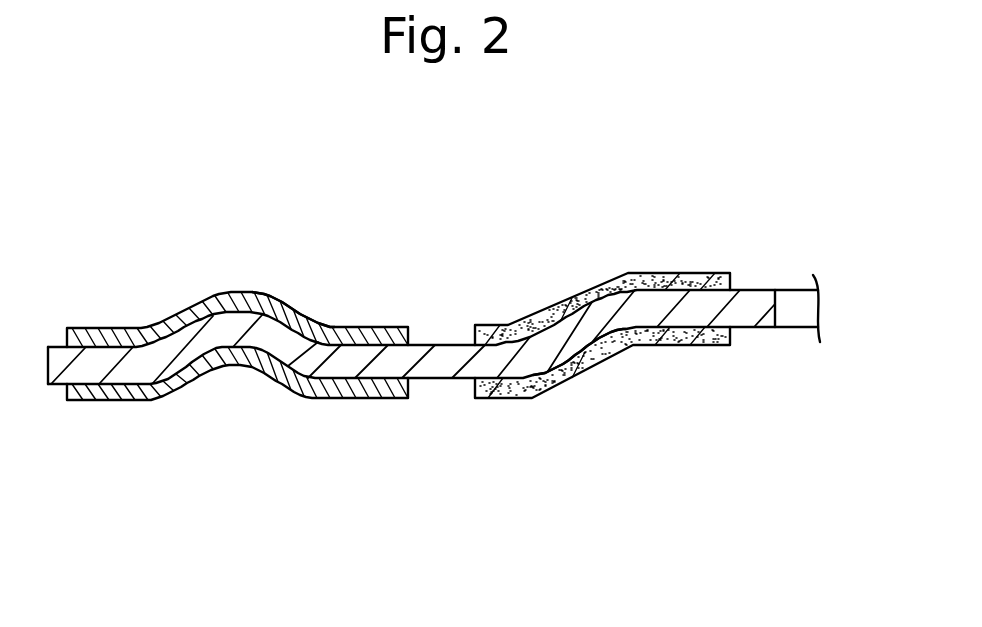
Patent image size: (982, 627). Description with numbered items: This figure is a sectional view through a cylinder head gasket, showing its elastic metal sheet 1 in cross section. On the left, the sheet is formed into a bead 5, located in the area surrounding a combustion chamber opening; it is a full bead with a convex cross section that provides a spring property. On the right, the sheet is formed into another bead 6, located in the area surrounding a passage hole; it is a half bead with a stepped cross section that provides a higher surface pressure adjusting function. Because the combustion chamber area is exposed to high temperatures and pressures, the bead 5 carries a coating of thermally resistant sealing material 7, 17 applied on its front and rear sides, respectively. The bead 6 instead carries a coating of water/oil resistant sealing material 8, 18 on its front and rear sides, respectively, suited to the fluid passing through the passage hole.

The elastic metal sheet 1 is at (752, 303).
The bead 5 is at (220, 332).
The bead 6 is at (577, 328).
The thermally resistant sealing material 7 is at (314, 310).
The water/oil resistant sealing material 8 is at (663, 277).
The thermally resistant sealing material 17 is at (313, 398).
The water/oil resistant sealing material 18 is at (509, 391).